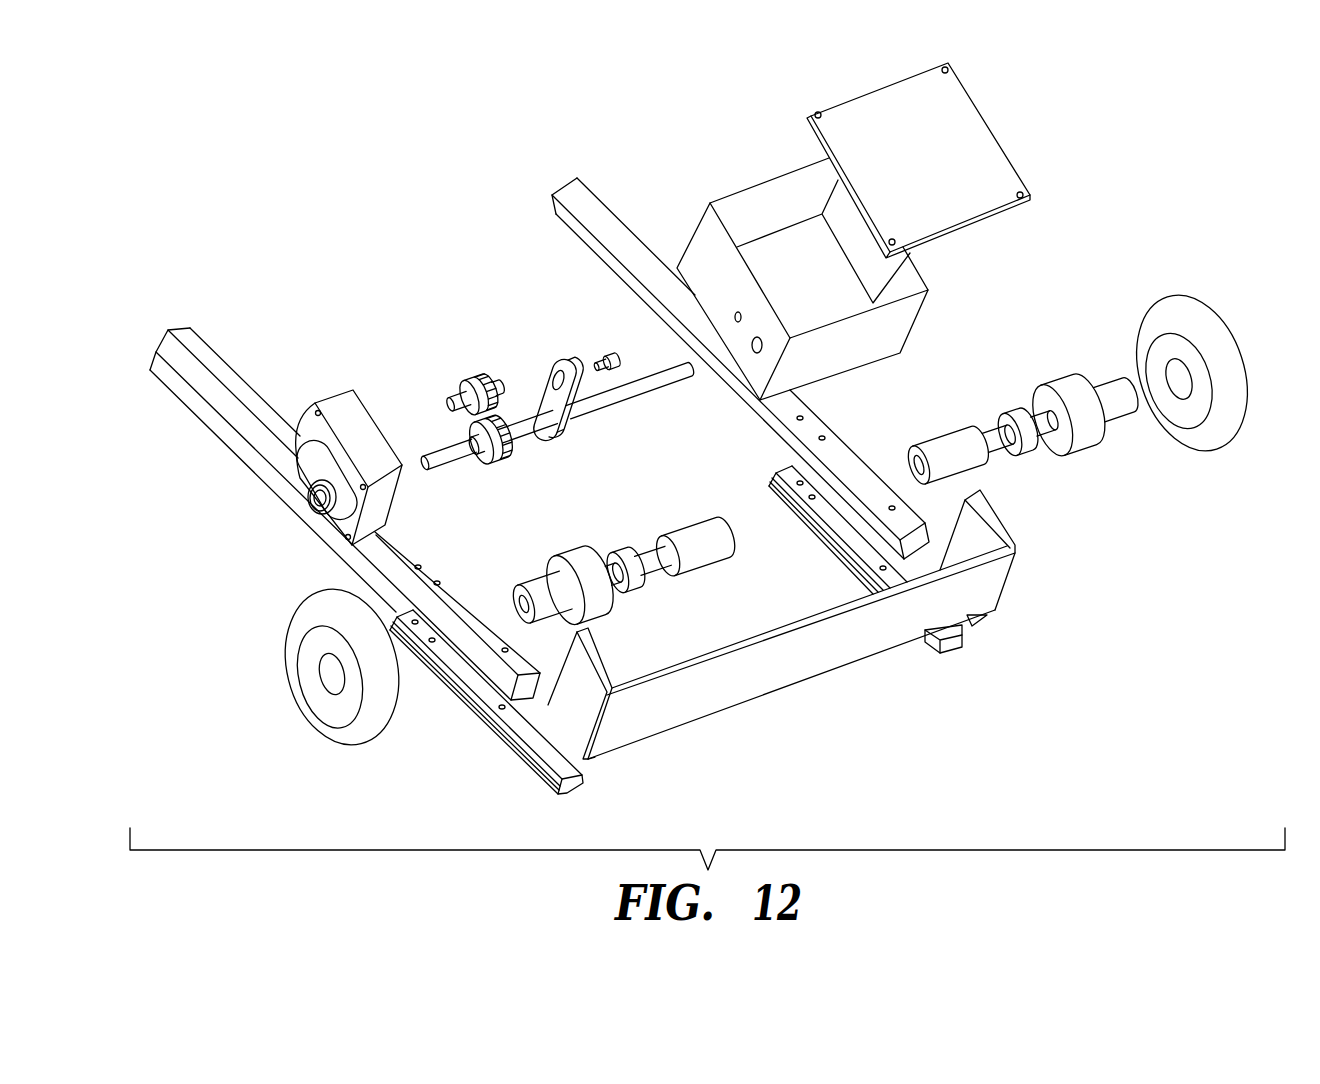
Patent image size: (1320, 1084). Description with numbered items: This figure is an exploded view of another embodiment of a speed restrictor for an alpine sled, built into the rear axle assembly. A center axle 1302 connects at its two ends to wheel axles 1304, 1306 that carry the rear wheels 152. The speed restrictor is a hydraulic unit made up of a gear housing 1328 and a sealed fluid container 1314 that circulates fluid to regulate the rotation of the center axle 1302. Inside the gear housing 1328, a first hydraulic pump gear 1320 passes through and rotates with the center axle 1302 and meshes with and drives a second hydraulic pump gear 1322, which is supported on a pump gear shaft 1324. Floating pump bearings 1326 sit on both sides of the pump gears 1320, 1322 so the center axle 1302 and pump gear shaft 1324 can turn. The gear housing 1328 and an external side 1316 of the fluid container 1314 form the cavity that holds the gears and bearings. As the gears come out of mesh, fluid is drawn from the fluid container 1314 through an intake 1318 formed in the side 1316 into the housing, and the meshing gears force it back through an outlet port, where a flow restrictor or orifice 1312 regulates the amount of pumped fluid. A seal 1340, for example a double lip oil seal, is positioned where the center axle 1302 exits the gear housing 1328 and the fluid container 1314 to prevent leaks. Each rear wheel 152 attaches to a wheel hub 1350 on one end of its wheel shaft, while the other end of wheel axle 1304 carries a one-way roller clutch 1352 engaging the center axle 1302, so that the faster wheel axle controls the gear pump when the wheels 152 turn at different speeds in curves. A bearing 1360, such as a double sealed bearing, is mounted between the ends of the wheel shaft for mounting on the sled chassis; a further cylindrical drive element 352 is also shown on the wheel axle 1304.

The rear wheel 152 is at (363, 740).
The drive coupling cylinder 352 is at (714, 525).
The center axle 1302 is at (466, 456).
The wheel axle 1304 is at (660, 566).
The wheel axle 1306 is at (994, 427).
The flow restrictor or orifice 1312 is at (604, 354).
The sealed fluid container 1314 is at (762, 190).
The external side of fluid container 1316 is at (700, 240).
The intake 1318 is at (752, 347).
The first hydraulic pump gear 1320 is at (512, 455).
The second hydraulic pump gear 1322 is at (478, 380).
The pump gear shaft 1324 is at (446, 402).
The floating pump bearing 1326 is at (540, 360).
The gear housing 1328 is at (300, 460).
The seal 1340 is at (312, 500).
The wheel hub 1350 is at (552, 590).
The one-way roller clutch 1352 is at (931, 447).
The bearing 1360 is at (630, 556).